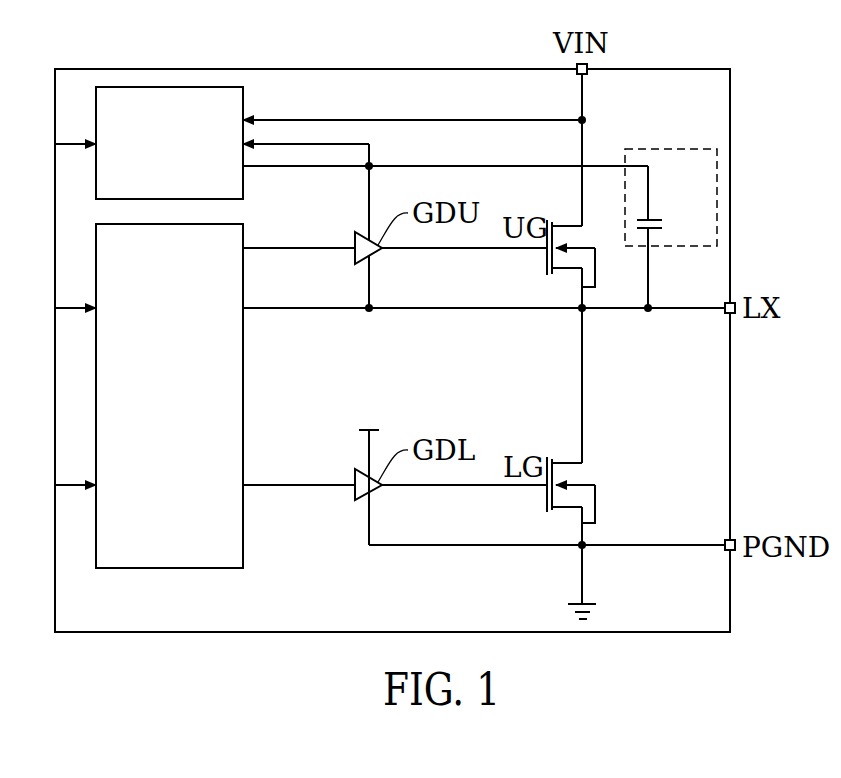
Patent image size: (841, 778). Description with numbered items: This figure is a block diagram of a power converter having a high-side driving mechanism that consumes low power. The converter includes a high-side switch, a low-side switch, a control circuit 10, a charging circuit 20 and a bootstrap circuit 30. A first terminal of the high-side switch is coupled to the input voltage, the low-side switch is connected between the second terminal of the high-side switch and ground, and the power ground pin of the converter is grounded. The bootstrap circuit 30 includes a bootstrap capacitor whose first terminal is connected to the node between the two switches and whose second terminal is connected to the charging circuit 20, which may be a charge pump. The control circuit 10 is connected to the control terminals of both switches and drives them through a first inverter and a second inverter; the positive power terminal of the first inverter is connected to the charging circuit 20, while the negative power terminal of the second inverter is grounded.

The control circuit 10 is at (243, 395).
The charging circuit 20 is at (170, 87).
The bootstrap circuit 30 is at (672, 149).